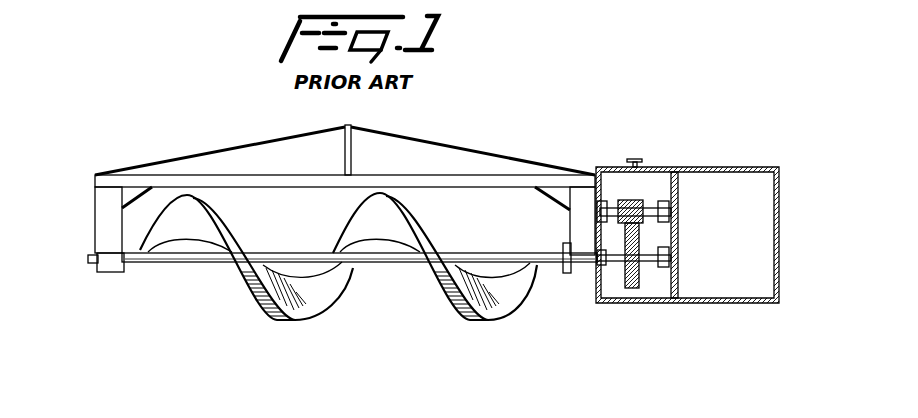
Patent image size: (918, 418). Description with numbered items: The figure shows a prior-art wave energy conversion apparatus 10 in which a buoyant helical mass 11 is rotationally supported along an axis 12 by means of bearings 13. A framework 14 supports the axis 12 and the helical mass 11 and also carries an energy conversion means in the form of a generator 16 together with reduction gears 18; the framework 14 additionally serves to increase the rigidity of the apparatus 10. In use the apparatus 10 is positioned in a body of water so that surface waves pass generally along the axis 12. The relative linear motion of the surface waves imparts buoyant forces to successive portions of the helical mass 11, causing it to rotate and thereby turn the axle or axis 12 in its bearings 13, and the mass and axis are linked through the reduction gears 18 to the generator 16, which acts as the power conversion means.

The wave energy conversion apparatus 10 is at (500, 136).
The buoyant helical mass 11 is at (313, 313).
The axis 12 is at (190, 263).
The bearings 13 is at (98, 271).
The framework 14 is at (508, 178).
The generator 16 is at (743, 273).
The reduction gears 18 is at (635, 288).